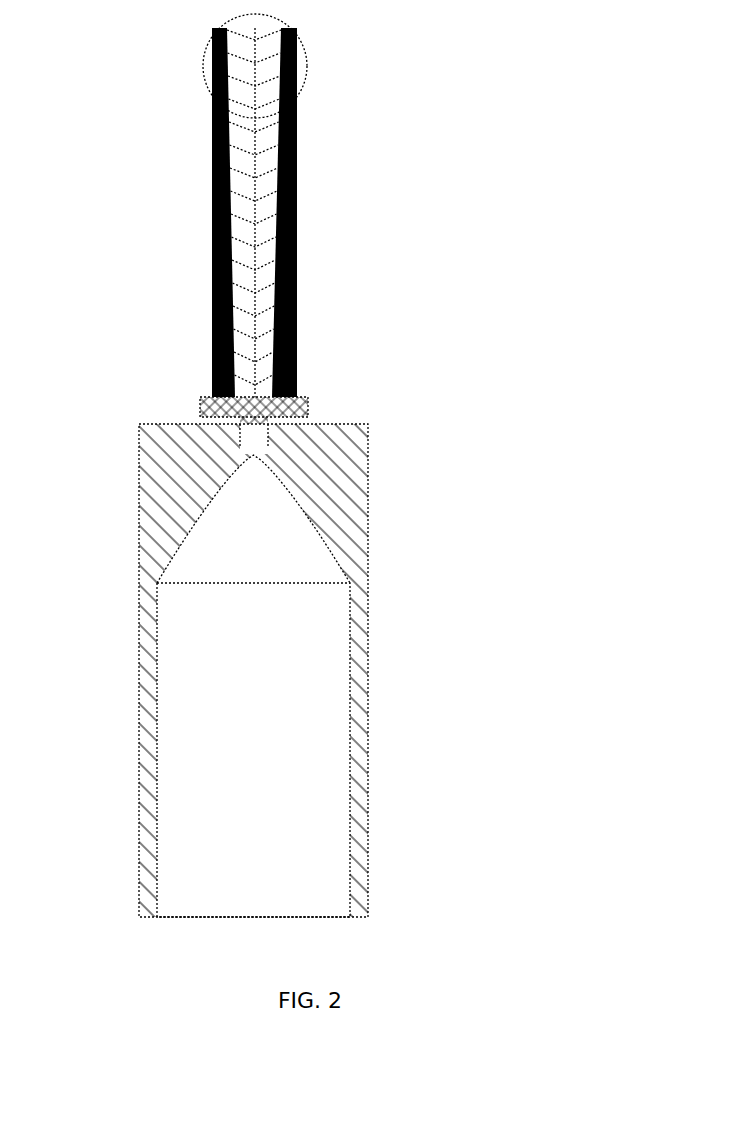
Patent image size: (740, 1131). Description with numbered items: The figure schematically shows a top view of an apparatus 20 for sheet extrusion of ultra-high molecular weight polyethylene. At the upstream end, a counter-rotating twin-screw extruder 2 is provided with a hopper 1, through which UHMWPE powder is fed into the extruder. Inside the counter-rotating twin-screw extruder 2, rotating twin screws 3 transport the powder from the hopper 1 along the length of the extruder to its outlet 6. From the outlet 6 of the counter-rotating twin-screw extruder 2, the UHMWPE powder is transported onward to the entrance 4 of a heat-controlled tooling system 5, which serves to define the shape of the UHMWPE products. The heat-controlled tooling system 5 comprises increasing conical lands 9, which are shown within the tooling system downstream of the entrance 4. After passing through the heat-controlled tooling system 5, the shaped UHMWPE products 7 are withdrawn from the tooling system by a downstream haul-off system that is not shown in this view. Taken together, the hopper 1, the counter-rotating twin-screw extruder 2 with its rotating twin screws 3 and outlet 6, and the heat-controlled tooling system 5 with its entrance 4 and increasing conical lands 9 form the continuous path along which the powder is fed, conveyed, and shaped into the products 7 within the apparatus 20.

The hopper 1 is at (312, 64).
The counter-rotating twin-screw extruder 2 is at (185, 212).
The rotating twin screws 3 is at (189, 212).
The entrance 4 is at (311, 394).
The heat-controlled tooling system 5 is at (324, 670).
The outlet 6 is at (169, 389).
The UHMWPE products 7 is at (208, 750).
The increasing conical lands 9 is at (192, 519).
The apparatus for sheet extrusion 20 is at (324, 216).